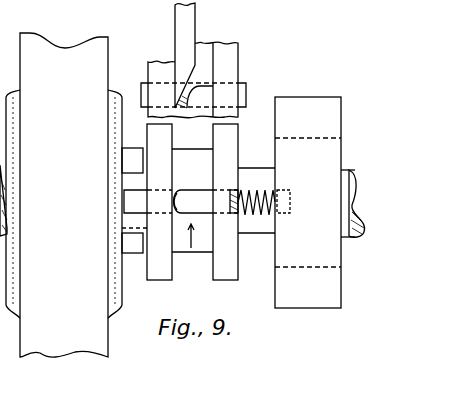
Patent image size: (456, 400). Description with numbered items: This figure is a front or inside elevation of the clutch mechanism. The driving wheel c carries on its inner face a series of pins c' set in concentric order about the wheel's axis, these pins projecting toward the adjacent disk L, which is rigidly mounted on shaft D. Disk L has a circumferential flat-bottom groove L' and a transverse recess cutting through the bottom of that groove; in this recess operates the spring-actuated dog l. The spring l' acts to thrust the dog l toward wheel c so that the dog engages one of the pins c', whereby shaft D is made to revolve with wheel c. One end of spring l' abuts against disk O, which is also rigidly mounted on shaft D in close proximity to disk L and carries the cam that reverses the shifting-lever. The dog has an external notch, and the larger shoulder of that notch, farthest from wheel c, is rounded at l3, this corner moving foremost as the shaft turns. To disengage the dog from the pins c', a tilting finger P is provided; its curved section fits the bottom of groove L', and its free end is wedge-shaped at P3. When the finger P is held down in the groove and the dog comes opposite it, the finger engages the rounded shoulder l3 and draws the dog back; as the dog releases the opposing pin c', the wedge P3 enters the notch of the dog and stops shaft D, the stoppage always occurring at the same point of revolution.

The wheel c is at (64, 195).
The pins c' is at (134, 200).
The tilting finger P is at (185, 55).
The rounded shoulder l3 is at (197, 81).
The wedge-shaped free end P3 is at (181, 112).
The disk L is at (192, 202).
The circumferential flat-bottom groove L' is at (192, 224).
The spring-actuated dog l is at (194, 219).
The spring l' is at (256, 200).
The disk O is at (308, 202).
The shaft D is at (354, 199).